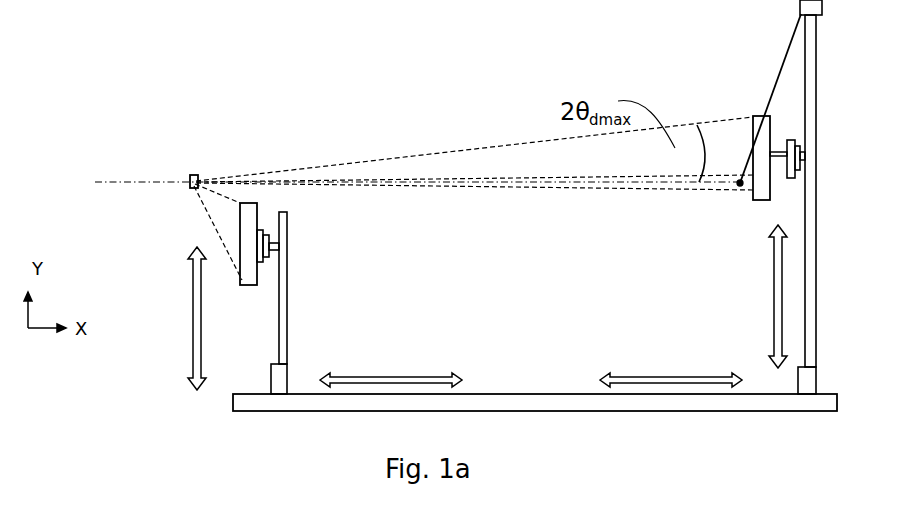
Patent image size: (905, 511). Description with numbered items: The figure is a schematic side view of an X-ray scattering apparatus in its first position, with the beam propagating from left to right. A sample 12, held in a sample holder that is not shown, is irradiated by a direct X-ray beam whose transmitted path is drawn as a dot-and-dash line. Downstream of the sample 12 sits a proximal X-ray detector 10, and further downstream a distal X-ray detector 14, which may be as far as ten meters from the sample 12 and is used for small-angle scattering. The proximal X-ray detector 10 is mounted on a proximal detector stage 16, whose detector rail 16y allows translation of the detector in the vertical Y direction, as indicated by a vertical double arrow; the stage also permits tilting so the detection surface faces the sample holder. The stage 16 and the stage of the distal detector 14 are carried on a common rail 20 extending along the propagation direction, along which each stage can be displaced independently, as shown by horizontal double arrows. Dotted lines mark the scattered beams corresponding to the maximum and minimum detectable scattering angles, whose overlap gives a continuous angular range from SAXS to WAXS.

The proximal X-ray detector 10 is at (252, 267).
The sample 12 is at (195, 175).
The distal X-ray detector 14 is at (765, 182).
The proximal detector stage 16 is at (505, 197).
The detector rail 16y is at (288, 318).
The common rail 20 is at (530, 396).